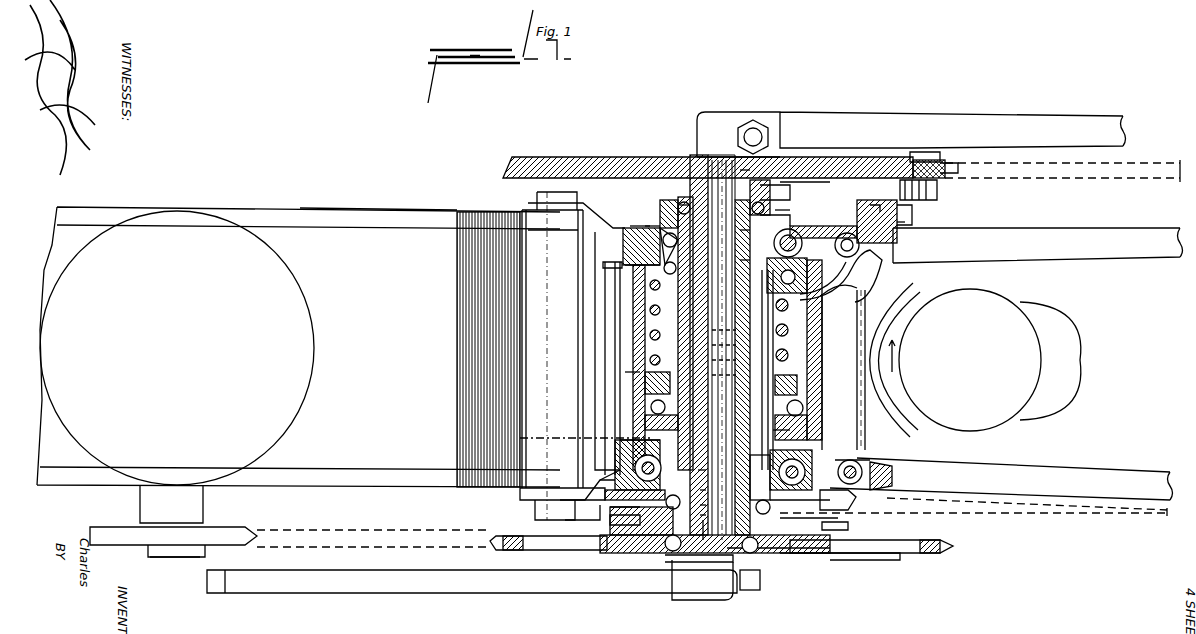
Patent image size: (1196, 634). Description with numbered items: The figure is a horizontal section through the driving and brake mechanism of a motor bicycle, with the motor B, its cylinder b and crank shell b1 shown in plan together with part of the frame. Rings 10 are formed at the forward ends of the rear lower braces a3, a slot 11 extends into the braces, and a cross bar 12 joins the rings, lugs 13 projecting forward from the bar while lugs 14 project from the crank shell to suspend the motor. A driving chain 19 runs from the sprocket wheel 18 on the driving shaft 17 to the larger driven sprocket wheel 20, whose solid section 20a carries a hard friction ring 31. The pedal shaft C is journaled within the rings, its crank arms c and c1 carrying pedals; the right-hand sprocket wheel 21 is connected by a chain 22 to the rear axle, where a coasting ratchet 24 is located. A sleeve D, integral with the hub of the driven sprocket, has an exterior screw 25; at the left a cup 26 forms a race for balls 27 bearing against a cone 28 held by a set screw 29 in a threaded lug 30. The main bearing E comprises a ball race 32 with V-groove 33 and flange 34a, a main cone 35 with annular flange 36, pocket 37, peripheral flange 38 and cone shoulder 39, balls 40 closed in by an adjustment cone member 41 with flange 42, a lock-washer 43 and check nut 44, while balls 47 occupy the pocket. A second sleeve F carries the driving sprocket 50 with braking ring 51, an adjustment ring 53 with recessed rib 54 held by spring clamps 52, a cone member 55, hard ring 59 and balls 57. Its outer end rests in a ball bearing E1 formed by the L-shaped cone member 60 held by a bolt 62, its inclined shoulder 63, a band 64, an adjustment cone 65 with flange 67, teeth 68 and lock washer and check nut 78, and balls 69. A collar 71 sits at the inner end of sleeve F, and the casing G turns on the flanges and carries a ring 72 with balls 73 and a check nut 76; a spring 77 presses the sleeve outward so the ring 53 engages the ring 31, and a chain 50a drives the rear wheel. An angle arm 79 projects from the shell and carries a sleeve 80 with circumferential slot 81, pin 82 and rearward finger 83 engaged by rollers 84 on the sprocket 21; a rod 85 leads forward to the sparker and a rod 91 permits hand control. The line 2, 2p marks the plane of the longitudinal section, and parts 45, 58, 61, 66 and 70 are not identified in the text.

The motor B is at (298, 347).
The cylinder b is at (177, 348).
The crank shell b1 is at (372, 210).
The sprocket wheel 18 is at (122, 527).
The driving shaft 17 is at (180, 558).
The driving chain 19 is at (374, 530).
The crank arm c1 is at (472, 580).
The driven sprocket wheel 20 is at (515, 552).
The solid section 20a is at (835, 553).
The lugs 13 is at (535, 200).
The lugs 14 is at (547, 232).
The rings 10 is at (619, 230).
The cross bar 12 is at (613, 336).
The external peripheral flange 38 is at (643, 265).
The pedal shaft C is at (612, 371).
The sleeve D is at (720, 347).
The balls 40 is at (624, 240).
The sprocket wheel 21 is at (598, 160).
The main bearing E is at (655, 157).
The crank arm c is at (1059, 150).
The chain 22 is at (1090, 183).
The rear lower braces a3 is at (1006, 364).
The chain 50a is at (973, 516).
The section line 2 is at (880, 362).
The angle arm 79 is at (912, 282).
The hub 45 is at (740, 183).
The balls 47 is at (742, 208).
The exterior screw 25 is at (740, 230).
The main cone 35 is at (740, 260).
The spring 77 is at (721, 352).
The coasting ratchet 24 is at (690, 240).
The external annular peripheral flange 34a is at (635, 225).
The outer annular flange 42 is at (650, 226).
The pocket 37 is at (685, 210).
The collar 71 is at (660, 312).
The ring 72 is at (660, 337).
The check nut 76 is at (645, 381).
The flange 67 is at (630, 440).
The ball bearing E1 is at (608, 452).
The section line 2p is at (585, 435).
The balls 69 is at (713, 465).
The marginal recessed rib 54 is at (648, 502).
The driving sprocket 50 is at (666, 502).
The inclined shoulder 63 is at (600, 521).
The ring 31 is at (615, 524).
The adjustment ring 53 is at (625, 548).
The cup 26 is at (660, 553).
The balls 27 is at (675, 562).
The threaded lug 30 is at (722, 598).
The set screw 29 is at (752, 592).
The plate 58 is at (795, 556).
The hard ring 59 is at (700, 490).
The cone member 55 is at (702, 505).
The balls 57 is at (702, 515).
The cone 28 is at (701, 528).
The sleeve 70 is at (700, 468).
The band 64 is at (746, 468).
The rod 66 is at (759, 370).
The teeth 68 is at (772, 425).
The V-groove 33 is at (816, 350).
The cone shoulder 39 is at (803, 270).
The second sleeve F is at (783, 330).
The casing G is at (843, 367).
The balls 73 is at (810, 342).
The adjustment cone 65 is at (808, 420).
The lock washer and check nut 78 is at (812, 440).
The slot 11 is at (885, 503).
The ball race 32 is at (850, 227).
The sleeve 80 is at (860, 247).
The rod 85 is at (841, 281).
The annular flange 36 is at (772, 200).
The check nut 44 is at (795, 185).
The lock-washer 43 is at (800, 225).
The adjustment cone member 41 is at (791, 208).
The pin 82 is at (873, 206).
The finger 83 is at (905, 190).
The rollers 84 is at (946, 184).
The circumferential slot 81 is at (898, 212).
The rod 91 is at (912, 222).
The bearing block 61 is at (885, 475).
The cone member 60 is at (852, 460).
The bolt 62 is at (862, 464).
The braking ring 51 is at (838, 498).
The spring clamps 52 is at (838, 519).